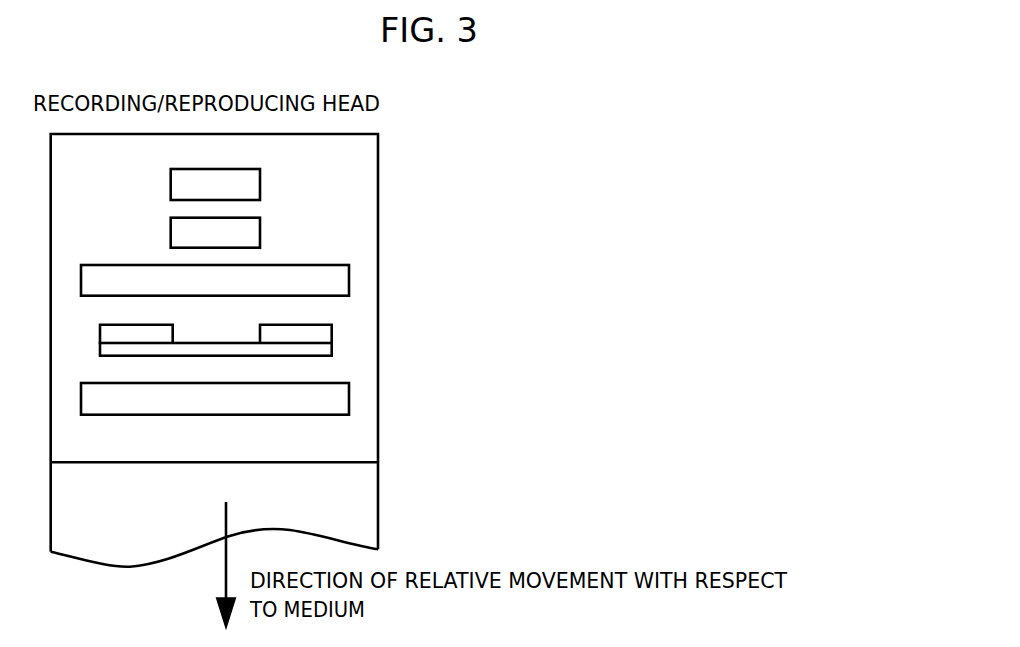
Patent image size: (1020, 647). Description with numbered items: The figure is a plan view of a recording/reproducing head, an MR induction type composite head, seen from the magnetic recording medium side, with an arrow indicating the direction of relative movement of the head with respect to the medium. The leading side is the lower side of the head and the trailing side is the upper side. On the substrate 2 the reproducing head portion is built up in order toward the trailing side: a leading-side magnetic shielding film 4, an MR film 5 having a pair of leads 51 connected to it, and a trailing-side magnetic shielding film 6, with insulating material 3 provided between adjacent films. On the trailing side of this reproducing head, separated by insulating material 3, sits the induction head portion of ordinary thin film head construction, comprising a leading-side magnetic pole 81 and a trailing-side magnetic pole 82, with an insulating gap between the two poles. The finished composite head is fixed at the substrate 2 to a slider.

The trailing-side magnetic pole 82 is at (260, 186).
The leading-side magnetic pole 81 is at (254, 232).
The trailing-side magnetic shielding film 6 is at (340, 282).
The leads 51 is at (327, 336).
The MR film 5 is at (327, 349).
The leading-side magnetic shielding film 4 is at (343, 398).
The insulating material 3 is at (363, 442).
The substrate 2 is at (365, 514).